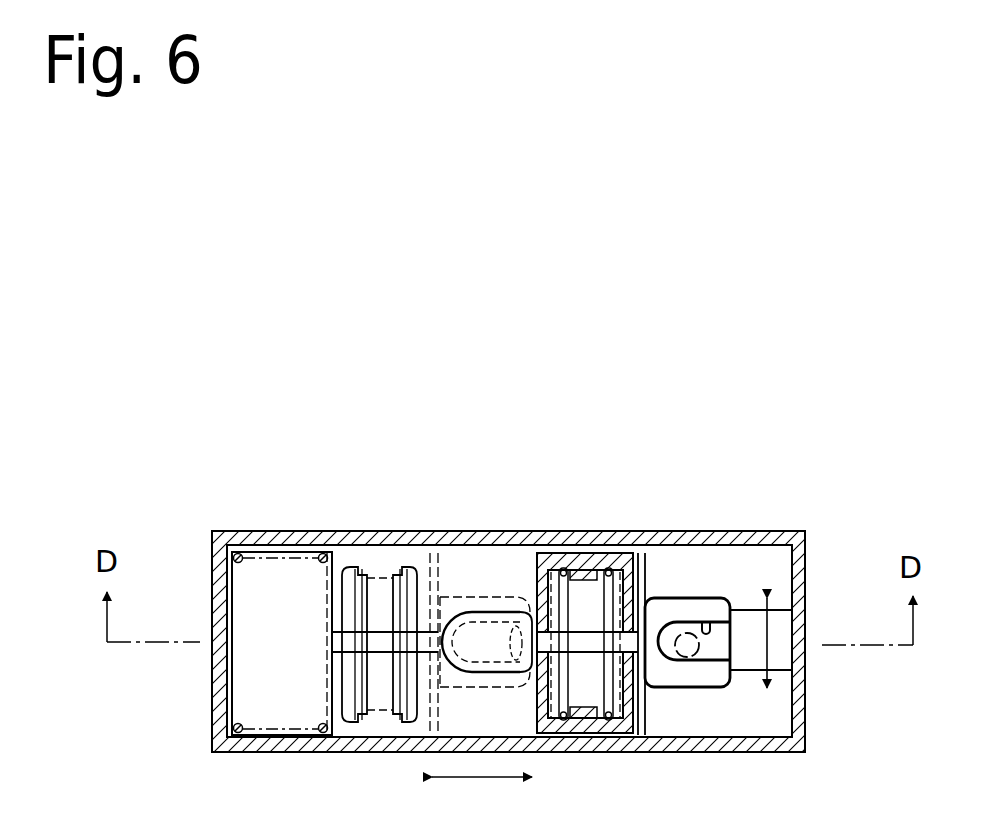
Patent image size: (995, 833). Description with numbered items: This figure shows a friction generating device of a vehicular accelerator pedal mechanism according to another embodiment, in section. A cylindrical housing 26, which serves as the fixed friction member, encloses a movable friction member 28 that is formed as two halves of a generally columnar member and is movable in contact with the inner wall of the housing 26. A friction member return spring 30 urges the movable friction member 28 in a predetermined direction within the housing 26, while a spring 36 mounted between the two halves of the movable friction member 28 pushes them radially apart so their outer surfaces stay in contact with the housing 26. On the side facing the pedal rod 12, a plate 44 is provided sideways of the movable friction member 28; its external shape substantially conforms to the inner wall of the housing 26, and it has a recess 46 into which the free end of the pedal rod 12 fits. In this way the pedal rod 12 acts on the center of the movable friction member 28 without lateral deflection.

The pedal rod 12 is at (682, 655).
The housing 26 is at (389, 538).
The movable friction member 28 is at (585, 575).
The friction member return spring 30 is at (266, 556).
The spring 36 is at (555, 735).
The plate 44 is at (681, 608).
The recess 46 is at (720, 630).